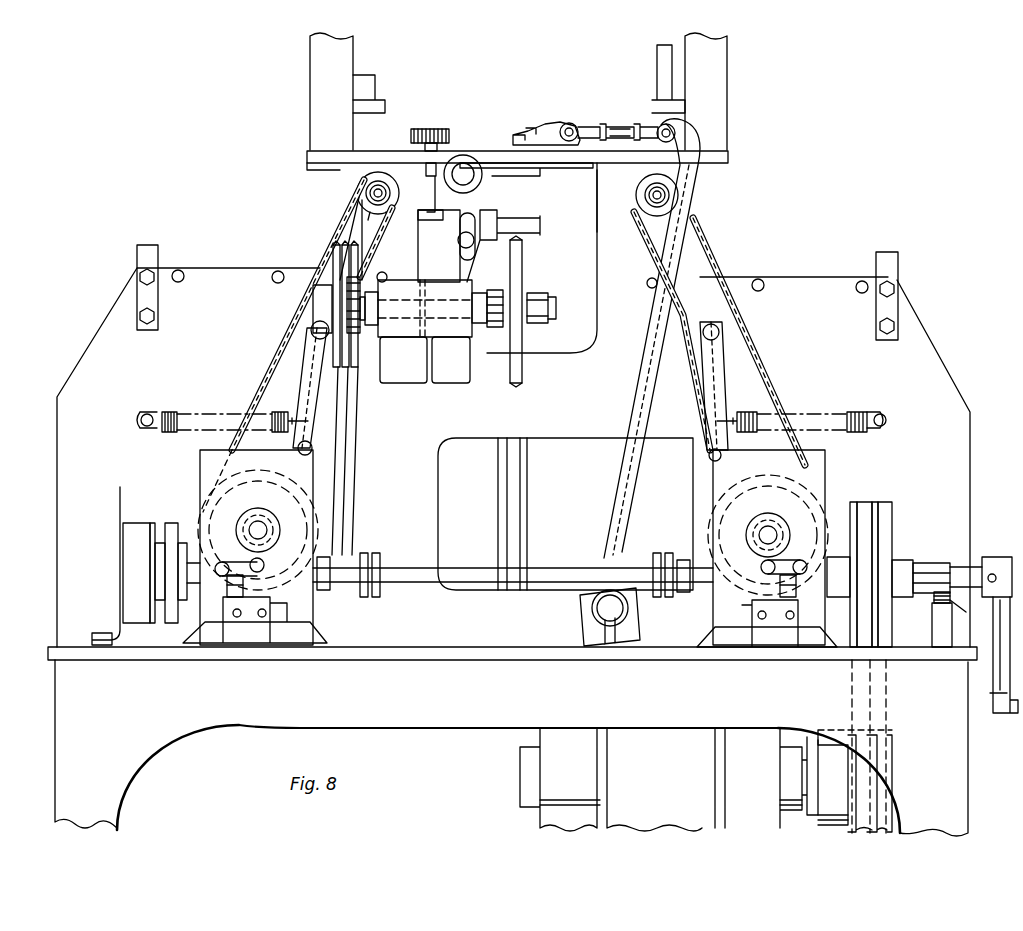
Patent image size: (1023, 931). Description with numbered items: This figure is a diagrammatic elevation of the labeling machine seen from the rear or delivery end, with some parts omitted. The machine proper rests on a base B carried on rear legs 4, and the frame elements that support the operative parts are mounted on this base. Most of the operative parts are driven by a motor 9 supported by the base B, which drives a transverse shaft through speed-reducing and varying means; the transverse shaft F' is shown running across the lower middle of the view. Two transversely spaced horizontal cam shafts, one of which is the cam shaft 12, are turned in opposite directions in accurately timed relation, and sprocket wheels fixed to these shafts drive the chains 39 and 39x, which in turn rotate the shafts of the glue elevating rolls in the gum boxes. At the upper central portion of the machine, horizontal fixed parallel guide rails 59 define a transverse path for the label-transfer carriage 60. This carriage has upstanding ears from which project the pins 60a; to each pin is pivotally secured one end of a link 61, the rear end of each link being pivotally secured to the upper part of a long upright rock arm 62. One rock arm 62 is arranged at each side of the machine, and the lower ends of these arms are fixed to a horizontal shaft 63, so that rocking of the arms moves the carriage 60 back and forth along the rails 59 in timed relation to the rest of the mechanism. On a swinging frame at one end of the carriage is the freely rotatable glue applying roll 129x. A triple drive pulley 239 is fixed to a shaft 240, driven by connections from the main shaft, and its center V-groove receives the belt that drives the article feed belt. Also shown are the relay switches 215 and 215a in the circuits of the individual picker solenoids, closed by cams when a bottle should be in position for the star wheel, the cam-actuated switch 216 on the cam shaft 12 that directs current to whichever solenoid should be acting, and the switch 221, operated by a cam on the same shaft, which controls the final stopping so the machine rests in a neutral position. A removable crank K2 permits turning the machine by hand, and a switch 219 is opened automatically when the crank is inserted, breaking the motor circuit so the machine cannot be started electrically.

The guide rails 59 is at (728, 159).
The label-transfer carriage 60 is at (512, 125).
The pin 60a is at (568, 123).
The link 61 is at (598, 127).
The rock arm 62 is at (700, 192).
The glue applying roll 129x is at (478, 180).
The chain 39x is at (262, 373).
The chain 39 is at (770, 384).
The shaft 240 is at (305, 311).
The triple drive pulley 239 is at (524, 375).
The shaft F' is at (513, 517).
The horizontal shaft 63 is at (597, 609).
The cam shaft 12 is at (768, 532).
The cam-actuated switch 216 is at (258, 557).
The switch 221 is at (263, 575).
The relay switch 215 is at (761, 555).
The relay switch 215a is at (757, 570).
The switch 219 is at (936, 604).
The removable crank K2 is at (984, 698).
The rear legs 4 is at (985, 789).
The base B is at (412, 714).
The motor 9 is at (605, 805).